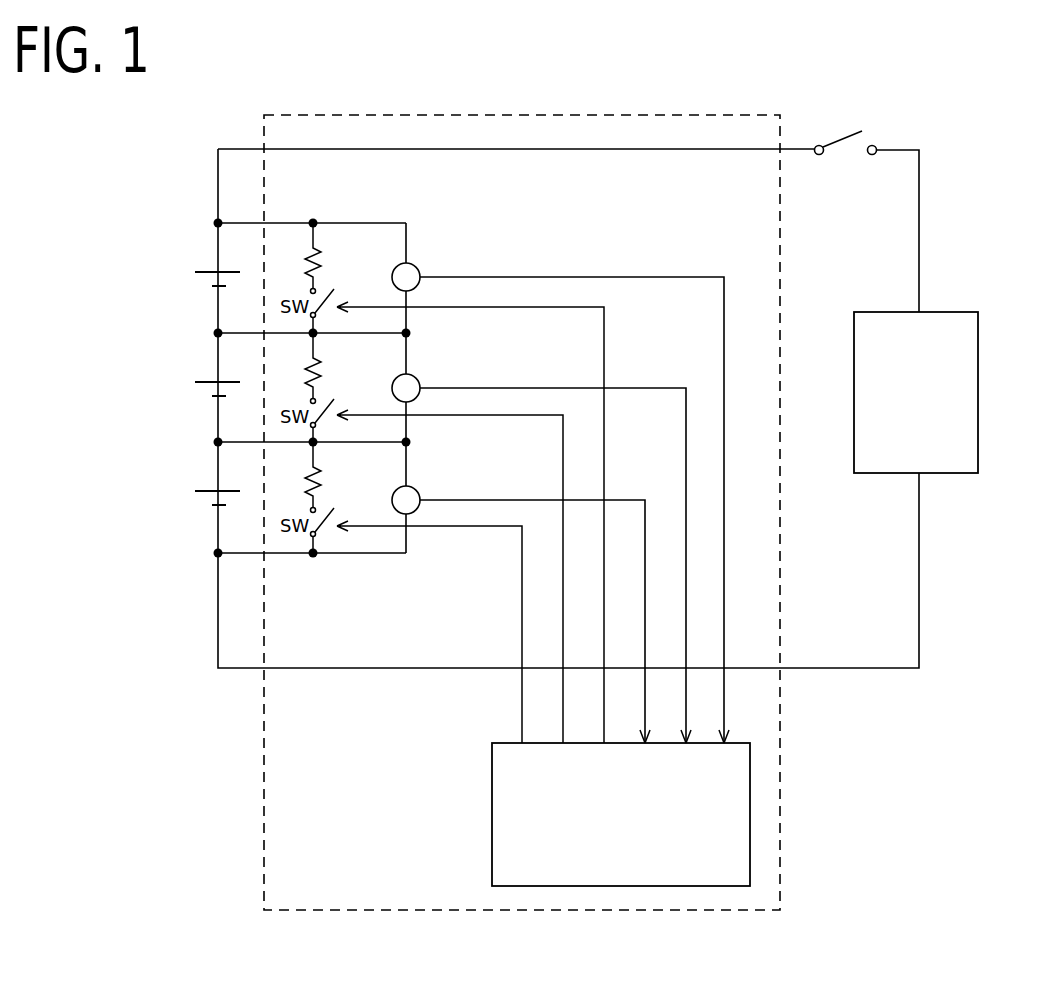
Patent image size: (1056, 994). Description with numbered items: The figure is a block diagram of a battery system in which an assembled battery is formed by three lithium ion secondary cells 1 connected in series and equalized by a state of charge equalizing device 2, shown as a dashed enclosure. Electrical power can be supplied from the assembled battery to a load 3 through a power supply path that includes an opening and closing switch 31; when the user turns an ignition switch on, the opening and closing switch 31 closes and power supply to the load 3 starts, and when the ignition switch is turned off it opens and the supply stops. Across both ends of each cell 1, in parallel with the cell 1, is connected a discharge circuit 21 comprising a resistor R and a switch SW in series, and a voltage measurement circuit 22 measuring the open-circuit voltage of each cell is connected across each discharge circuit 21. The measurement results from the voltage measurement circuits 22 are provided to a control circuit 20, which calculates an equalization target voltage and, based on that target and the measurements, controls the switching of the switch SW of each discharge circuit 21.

The cell 1 is at (201, 268).
The state of charge equalizing device 2 is at (563, 114).
The load 3 is at (981, 388).
The control circuit 20 is at (492, 812).
The discharge circuit 21 is at (323, 258).
The voltage measurement circuit 22 is at (411, 264).
The opening and closing switch 31 is at (839, 132).